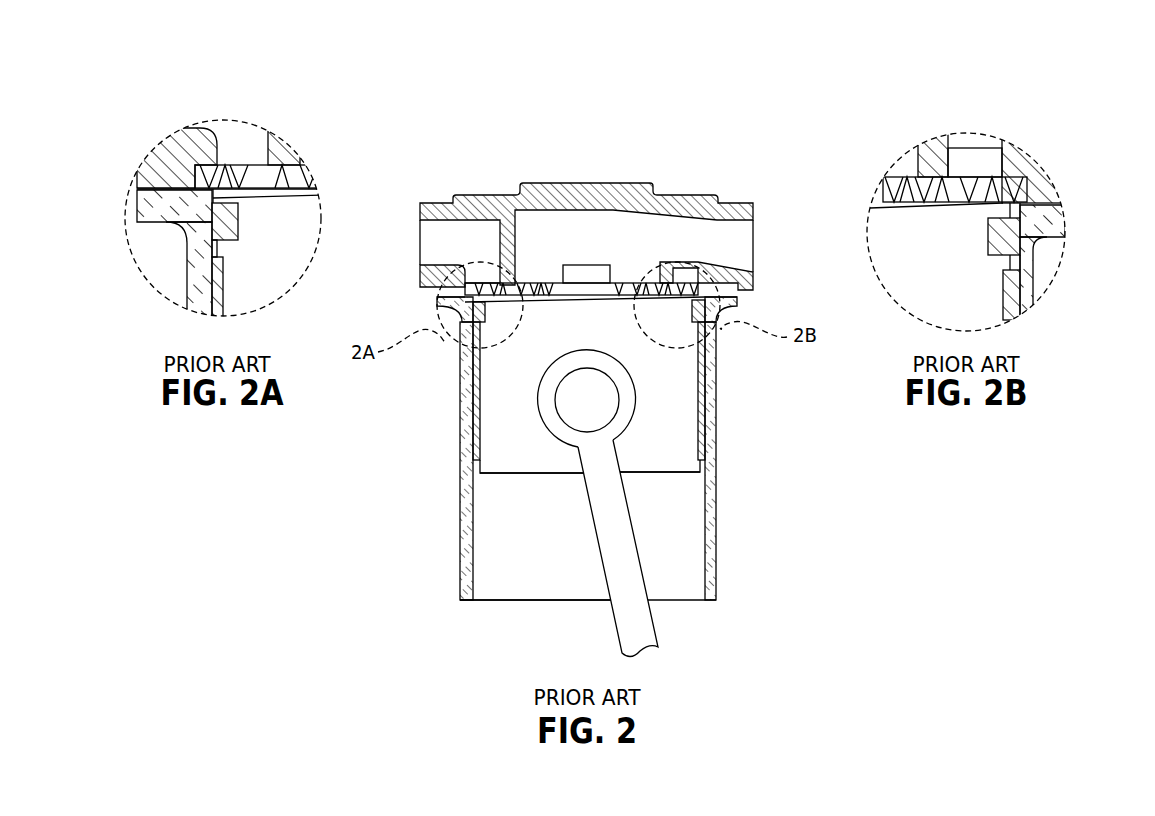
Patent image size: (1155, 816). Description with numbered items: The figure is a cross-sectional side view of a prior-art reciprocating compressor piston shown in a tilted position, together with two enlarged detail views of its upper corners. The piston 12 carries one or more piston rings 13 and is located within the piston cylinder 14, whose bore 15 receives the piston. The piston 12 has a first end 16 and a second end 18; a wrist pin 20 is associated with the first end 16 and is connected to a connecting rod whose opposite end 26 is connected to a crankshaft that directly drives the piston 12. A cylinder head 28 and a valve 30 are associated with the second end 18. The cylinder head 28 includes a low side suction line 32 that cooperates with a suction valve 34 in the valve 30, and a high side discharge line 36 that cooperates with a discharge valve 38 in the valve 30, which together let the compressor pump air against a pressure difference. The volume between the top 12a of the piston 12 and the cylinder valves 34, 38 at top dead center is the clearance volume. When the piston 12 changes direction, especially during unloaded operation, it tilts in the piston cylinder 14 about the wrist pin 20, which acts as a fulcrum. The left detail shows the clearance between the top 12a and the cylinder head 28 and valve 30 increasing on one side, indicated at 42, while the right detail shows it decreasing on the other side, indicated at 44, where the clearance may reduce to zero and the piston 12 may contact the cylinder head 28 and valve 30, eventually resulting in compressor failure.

In FIG. 2, the piston 12 is at (646, 383).
In FIG. 2A, the piston 12 is at (267, 243).
In FIG. 2B, the piston 12 is at (909, 278).
In FIG. 2, the top of the piston 12a is at (583, 265).
In FIG. 2A, the piston rings 13 is at (185, 225).
In FIG. 2B, the piston rings 13 is at (1043, 237).
In FIG. 2, the piston cylinder 14 is at (458, 447).
In FIG. 2A, the piston cylinder 14 is at (187, 290).
In FIG. 2B, the piston cylinder 14 is at (1033, 273).
In FIG. 2, the bore 15 is at (526, 548).
In FIG. 2, the first end 16 is at (670, 437).
In FIG. 2, the second end 18 is at (530, 355).
In FIG. 2, the wrist pin 20 is at (625, 410).
In FIG. 2, the opposite end of the connecting rod 26 is at (639, 615).
In FIG. 2, the cylinder head 28 is at (478, 195).
In FIG. 2, the valve 30 is at (648, 283).
In FIG. 2A, the valve 30 is at (267, 163).
In FIG. 2B, the valve 30 is at (915, 177).
In FIG. 2, the low side suction line 32 is at (755, 247).
In FIG. 2, the suction valve 34 is at (632, 282).
In FIG. 2B, the suction valve 34 is at (890, 182).
In FIG. 2, the high side discharge line 36 is at (420, 243).
In FIG. 2, the discharge valve 38 is at (490, 284).
In FIG. 2A, the discharge valve 38 is at (230, 170).
In FIG. 2A, the increased clearance distance 42 is at (205, 193).
In FIG. 2B, the decreased clearance distance 44 is at (1003, 200).